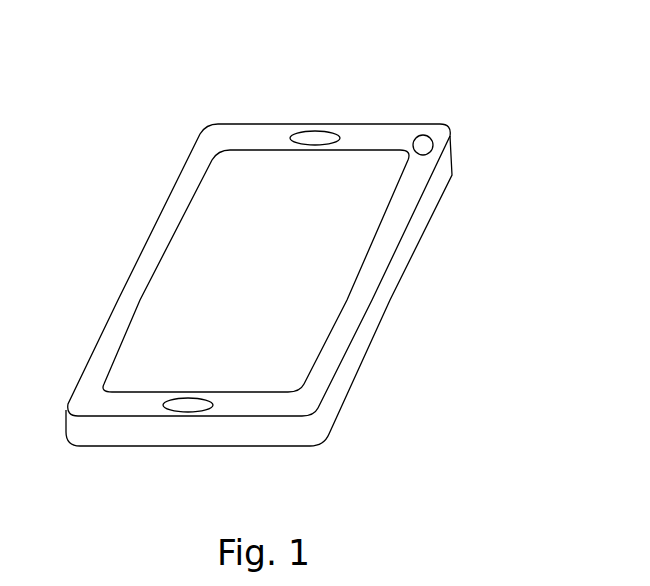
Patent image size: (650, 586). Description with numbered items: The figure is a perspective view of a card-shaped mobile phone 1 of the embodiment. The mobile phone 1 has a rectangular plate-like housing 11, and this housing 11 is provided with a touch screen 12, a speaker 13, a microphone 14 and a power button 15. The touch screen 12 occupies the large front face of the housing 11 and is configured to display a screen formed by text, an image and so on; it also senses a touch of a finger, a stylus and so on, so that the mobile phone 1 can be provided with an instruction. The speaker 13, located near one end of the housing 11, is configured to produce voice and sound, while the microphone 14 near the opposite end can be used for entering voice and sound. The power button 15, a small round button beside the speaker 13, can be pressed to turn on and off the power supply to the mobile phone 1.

The mobile phone 1 is at (219, 77).
The housing 11 is at (172, 193).
The touch screen 12 is at (160, 257).
The speaker 13 is at (316, 131).
The microphone 14 is at (185, 412).
The power button 15 is at (434, 143).